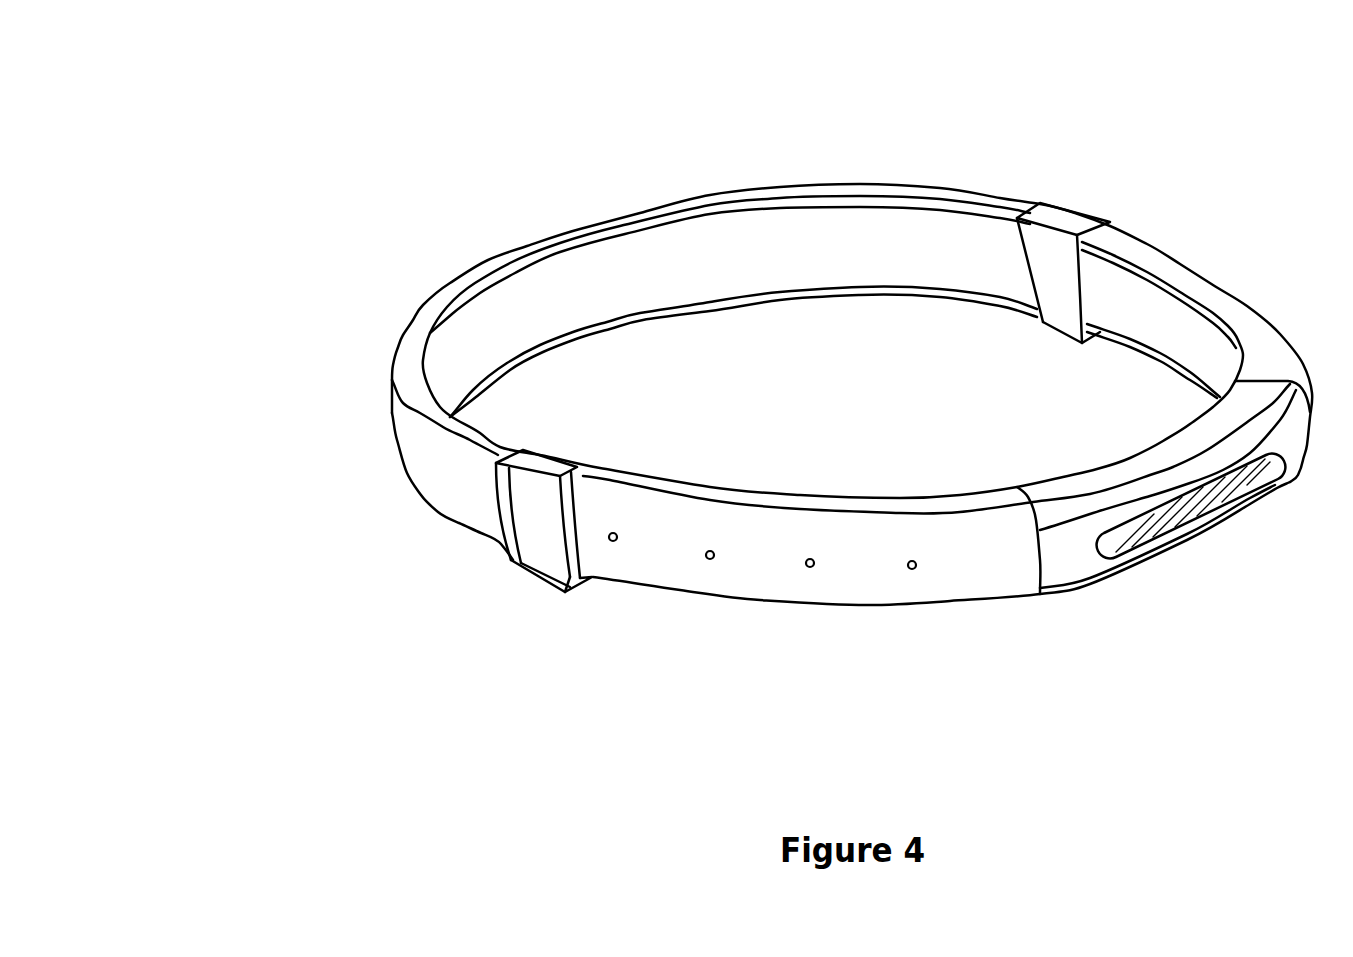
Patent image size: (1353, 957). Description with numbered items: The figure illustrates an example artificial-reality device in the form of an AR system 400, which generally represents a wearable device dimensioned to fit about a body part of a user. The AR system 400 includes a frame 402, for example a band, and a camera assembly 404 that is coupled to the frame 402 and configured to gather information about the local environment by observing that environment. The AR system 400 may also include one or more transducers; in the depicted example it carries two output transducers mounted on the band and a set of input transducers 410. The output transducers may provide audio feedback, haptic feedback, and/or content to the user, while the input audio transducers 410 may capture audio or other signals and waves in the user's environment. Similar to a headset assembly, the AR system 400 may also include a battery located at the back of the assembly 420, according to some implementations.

The AR system 400 is at (293, 79).
The frame 402 is at (807, 185).
The camera assembly 404 is at (1187, 540).
The input transducers 410 is at (910, 618).
The back of the assembly 420 is at (527, 243).